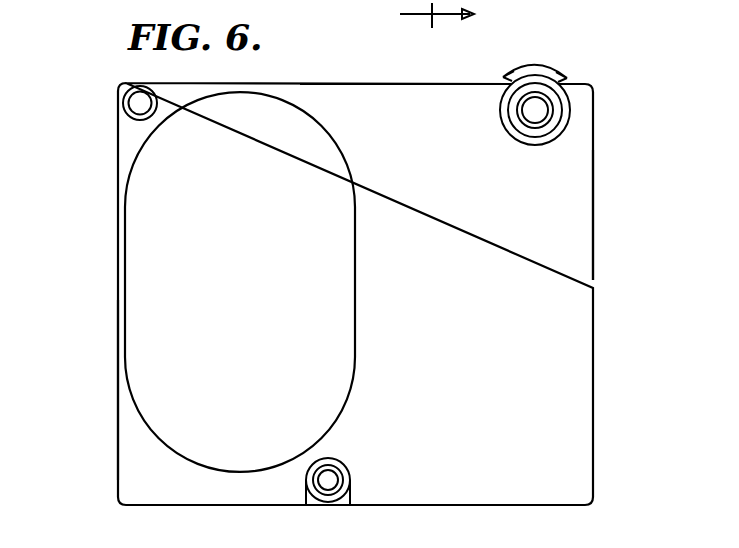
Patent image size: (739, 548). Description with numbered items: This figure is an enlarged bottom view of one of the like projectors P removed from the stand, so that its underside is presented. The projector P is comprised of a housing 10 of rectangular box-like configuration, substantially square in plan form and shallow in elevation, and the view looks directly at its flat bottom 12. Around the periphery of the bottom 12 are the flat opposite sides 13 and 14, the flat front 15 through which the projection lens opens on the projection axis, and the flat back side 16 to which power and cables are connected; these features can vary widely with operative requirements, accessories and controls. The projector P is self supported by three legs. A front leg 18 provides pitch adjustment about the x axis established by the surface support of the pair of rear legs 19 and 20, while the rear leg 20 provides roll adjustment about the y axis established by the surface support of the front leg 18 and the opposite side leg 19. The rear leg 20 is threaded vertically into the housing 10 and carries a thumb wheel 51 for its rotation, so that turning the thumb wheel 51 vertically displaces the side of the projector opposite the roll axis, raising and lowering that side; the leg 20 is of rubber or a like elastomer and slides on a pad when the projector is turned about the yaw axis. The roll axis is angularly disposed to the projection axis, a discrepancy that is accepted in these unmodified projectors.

The housing 10 is at (519, 252).
The flat bottom 12 is at (570, 368).
The flat opposite side 13 is at (118, 415).
The flat opposite side 14 is at (593, 232).
The flat front side 15 is at (404, 505).
The flat back side 16 is at (401, 84).
The front leg 18 is at (330, 479).
The rear leg 19 is at (128, 102).
The rear leg 20 is at (537, 110).
The thumb wheel 51 is at (558, 127).
The projector P is at (150, 284).